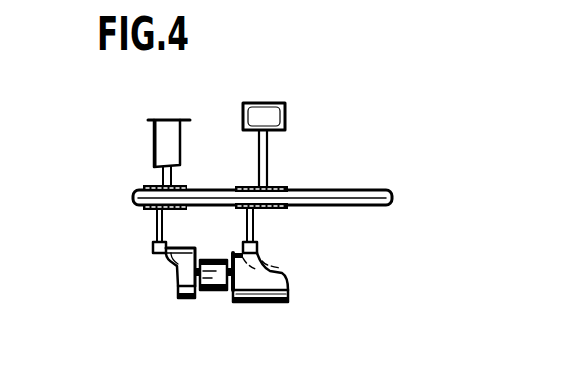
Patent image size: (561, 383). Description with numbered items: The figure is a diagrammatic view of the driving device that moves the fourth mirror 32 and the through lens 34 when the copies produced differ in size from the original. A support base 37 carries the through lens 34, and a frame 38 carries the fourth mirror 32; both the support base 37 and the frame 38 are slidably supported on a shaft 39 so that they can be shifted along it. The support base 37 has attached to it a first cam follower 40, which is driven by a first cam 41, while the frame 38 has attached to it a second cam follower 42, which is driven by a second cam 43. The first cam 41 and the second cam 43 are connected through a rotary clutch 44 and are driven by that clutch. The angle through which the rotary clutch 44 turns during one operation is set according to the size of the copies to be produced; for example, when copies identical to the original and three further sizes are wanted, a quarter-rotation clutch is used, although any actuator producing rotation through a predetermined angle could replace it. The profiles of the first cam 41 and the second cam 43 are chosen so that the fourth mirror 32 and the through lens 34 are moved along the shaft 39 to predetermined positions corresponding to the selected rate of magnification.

The fourth mirror 32 is at (173, 148).
The through lens 34 is at (265, 116).
The support base 37 is at (278, 184).
The frame 38 is at (150, 186).
The shaft 39 is at (370, 193).
The first cam follower 40 is at (253, 234).
The first cam 41 is at (260, 302).
The second cam follower 42 is at (157, 228).
The second cam 43 is at (179, 287).
The rotary clutch 44 is at (210, 293).